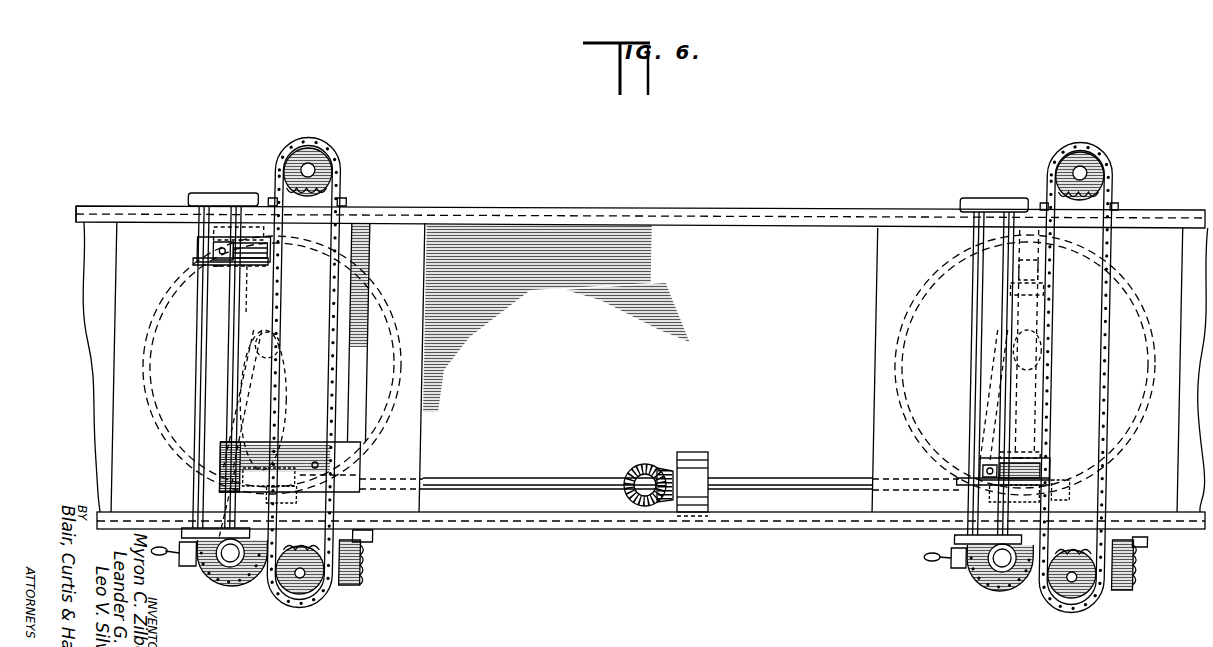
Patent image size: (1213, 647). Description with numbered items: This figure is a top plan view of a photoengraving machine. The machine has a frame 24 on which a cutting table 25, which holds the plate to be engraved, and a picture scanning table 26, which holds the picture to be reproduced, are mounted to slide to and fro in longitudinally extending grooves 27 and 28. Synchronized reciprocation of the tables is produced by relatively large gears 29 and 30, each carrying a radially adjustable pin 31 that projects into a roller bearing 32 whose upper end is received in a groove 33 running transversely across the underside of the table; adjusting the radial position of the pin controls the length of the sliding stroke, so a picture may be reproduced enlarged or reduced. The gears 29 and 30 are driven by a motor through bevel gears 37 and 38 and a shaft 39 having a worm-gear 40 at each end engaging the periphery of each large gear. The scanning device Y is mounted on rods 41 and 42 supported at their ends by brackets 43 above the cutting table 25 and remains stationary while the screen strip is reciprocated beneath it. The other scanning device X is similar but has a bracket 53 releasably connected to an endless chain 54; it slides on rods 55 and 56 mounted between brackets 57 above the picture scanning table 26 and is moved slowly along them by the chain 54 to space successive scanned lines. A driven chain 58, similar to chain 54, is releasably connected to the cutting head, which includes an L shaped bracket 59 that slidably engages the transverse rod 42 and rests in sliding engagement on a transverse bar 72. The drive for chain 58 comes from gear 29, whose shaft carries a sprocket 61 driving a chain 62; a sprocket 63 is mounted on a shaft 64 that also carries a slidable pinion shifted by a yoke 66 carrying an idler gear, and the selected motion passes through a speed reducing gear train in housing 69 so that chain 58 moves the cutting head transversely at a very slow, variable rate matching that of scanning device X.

The frame 24 is at (735, 210).
The cutting table 25 is at (403, 250).
The picture scanning table 26 is at (1160, 250).
The longitudinally extending groove 27 is at (572, 212).
The longitudinally extending groove 28 is at (547, 522).
The gear 29 is at (145, 320).
The gear 30 is at (900, 322).
The radially adjustable pin 31 is at (1046, 279).
The roller bearing 32 is at (274, 274).
The groove 33 is at (280, 308).
The bevel gear 37 is at (640, 465).
The bevel gear 38 is at (663, 467).
The shaft 39 is at (528, 480).
The worm-gear 40 is at (283, 503).
The rod 41 is at (200, 338).
The rod 42 is at (232, 370).
The bracket 43 is at (217, 205).
The bracket 53 is at (1048, 466).
The endless chain 54 is at (1110, 364).
The rod 55 is at (976, 282).
The rod 56 is at (1007, 312).
The bracket 57 is at (992, 208).
The driven chain 58 is at (330, 403).
The bracket 59 is at (347, 460).
The sprocket 61 is at (280, 348).
The chain 62 is at (278, 403).
The sprocket 63 is at (213, 567).
The shaft 64 is at (230, 558).
The yoke 66 is at (185, 562).
The housing 69 is at (337, 590).
The transverse bar 72 is at (363, 310).
The scanning device X is at (1025, 456).
The scanning device Y is at (220, 270).